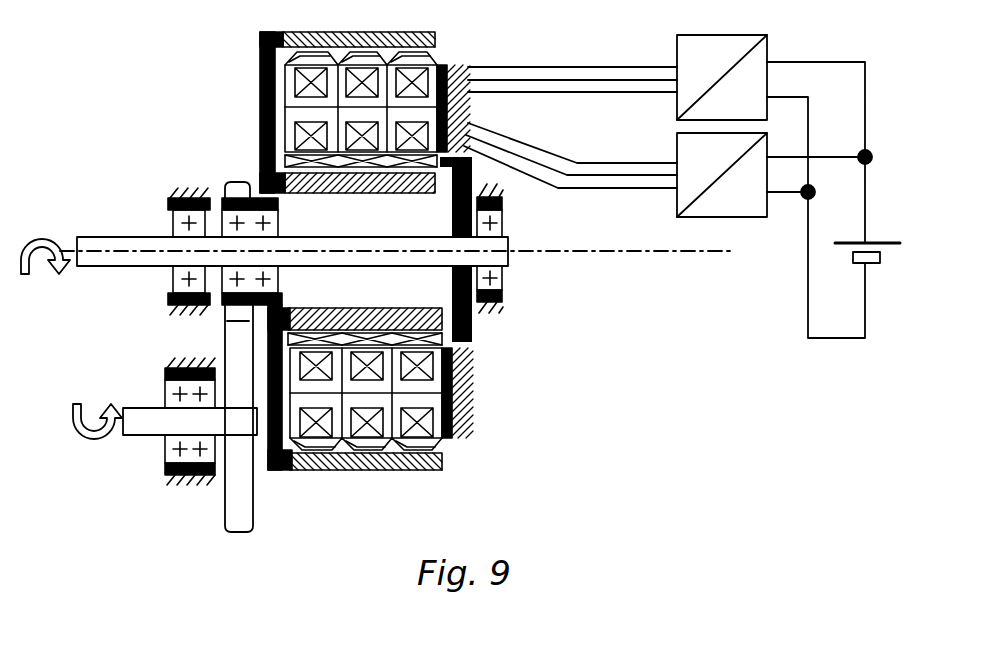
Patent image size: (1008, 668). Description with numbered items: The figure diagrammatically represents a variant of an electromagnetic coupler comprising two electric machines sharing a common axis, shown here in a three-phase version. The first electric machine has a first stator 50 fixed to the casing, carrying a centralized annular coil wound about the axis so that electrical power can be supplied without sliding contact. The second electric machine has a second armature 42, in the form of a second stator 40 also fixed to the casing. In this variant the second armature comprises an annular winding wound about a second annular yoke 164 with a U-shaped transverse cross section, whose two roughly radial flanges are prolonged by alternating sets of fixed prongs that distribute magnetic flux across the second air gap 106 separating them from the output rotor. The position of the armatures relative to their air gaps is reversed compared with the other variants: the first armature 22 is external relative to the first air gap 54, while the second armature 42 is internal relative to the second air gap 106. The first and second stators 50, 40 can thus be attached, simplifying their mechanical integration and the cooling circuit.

The second stator 40 is at (292, 97).
The first stator 50 is at (292, 136).
The first air gap 54 is at (440, 330).
The first armature 22 is at (479, 331).
The second annular yoke 164 is at (430, 402).
The second armature 42 is at (486, 390).
The second air gap 106 is at (423, 450).